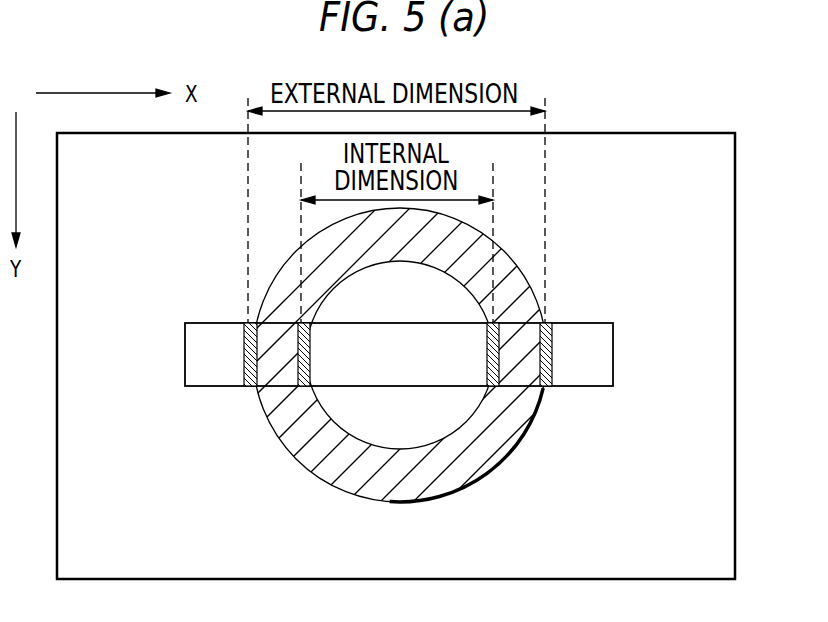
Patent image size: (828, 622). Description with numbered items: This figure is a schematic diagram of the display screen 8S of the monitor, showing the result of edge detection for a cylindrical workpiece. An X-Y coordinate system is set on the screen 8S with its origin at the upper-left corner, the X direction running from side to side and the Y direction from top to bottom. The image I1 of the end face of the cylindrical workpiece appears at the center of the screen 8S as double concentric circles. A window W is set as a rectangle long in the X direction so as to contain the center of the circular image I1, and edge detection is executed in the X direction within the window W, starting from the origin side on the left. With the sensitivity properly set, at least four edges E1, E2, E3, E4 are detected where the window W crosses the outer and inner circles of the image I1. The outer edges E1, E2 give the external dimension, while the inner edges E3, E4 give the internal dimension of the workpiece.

The display screen 8S is at (735, 200).
The window W is at (613, 348).
The edge E1 is at (244, 386).
The edge E2 is at (552, 380).
The edge E3 is at (299, 388).
The edge E4 is at (497, 388).
The image of an end face of the workpiece I1 is at (490, 478).